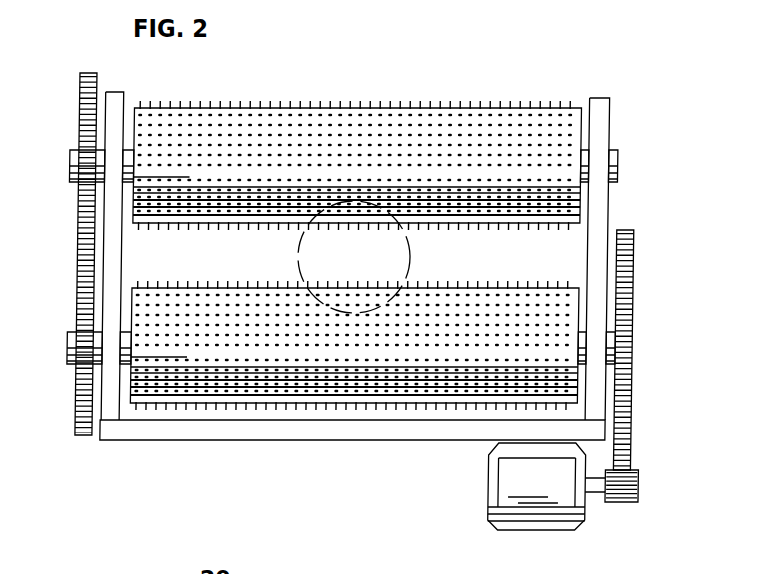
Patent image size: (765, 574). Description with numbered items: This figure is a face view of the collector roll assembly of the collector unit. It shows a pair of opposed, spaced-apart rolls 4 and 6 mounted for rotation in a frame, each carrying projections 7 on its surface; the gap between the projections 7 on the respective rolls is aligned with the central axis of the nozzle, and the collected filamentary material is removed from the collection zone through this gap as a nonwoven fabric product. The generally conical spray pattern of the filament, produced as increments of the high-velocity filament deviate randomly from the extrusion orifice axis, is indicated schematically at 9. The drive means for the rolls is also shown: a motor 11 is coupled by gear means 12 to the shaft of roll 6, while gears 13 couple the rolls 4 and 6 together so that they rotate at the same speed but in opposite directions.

The roll 4 is at (405, 130).
The roll 6 is at (427, 388).
The projections 7 is at (239, 107).
The spray pattern 9 is at (410, 250).
The motor 11 is at (541, 505).
The gear means 12 is at (638, 485).
The gears 13 is at (79, 112).